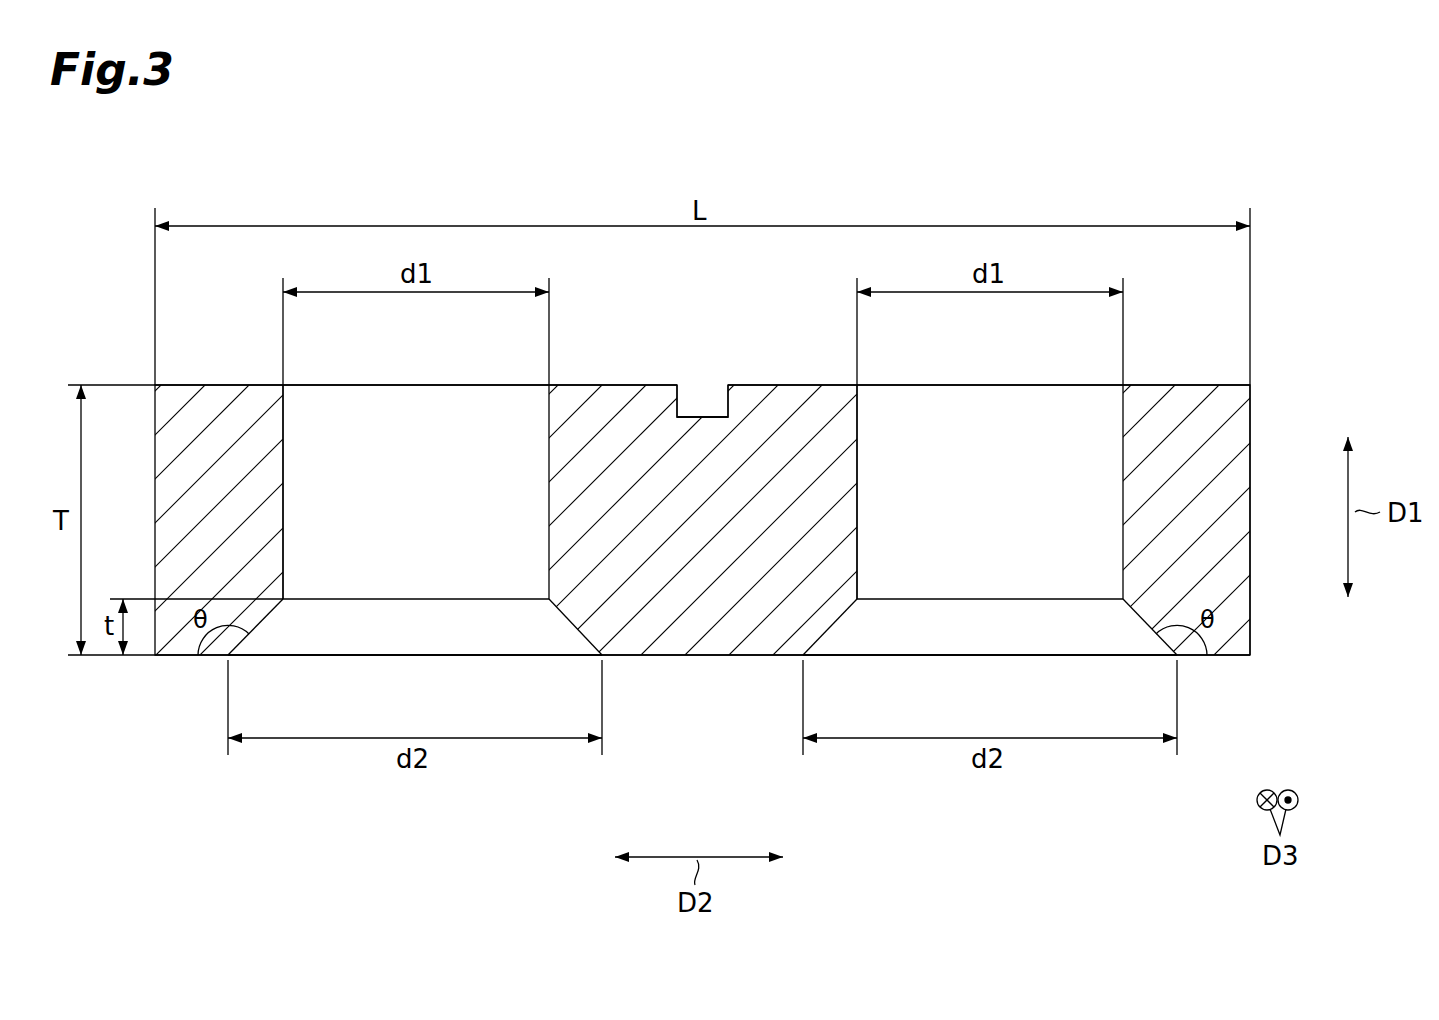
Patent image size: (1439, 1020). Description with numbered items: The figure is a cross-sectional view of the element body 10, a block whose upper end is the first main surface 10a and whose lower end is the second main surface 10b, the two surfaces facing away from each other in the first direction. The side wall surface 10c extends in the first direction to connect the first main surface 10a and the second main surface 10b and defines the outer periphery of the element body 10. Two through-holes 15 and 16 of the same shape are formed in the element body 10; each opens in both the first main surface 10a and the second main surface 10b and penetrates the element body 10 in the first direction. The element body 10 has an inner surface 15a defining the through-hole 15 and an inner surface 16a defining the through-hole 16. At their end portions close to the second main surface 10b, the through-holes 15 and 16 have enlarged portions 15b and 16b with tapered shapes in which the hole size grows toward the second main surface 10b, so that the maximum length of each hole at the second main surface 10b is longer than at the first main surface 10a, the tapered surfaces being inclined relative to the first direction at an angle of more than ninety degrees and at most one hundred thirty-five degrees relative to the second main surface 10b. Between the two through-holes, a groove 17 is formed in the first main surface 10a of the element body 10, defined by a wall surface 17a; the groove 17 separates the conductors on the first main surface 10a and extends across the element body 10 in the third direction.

The element body 10 is at (1252, 425).
The first main surface 10a is at (1193, 385).
The second main surface 10b is at (1230, 657).
The side wall surface 10c is at (1252, 498).
The through-hole 15 is at (413, 432).
The inner surface 15a is at (285, 430).
The enlarged portion 15b is at (488, 640).
The through-hole 16 is at (985, 432).
The inner surface 16a is at (859, 430).
The enlarged portion 16b is at (1062, 640).
The groove 17 is at (698, 388).
The wall surface 17a is at (713, 416).